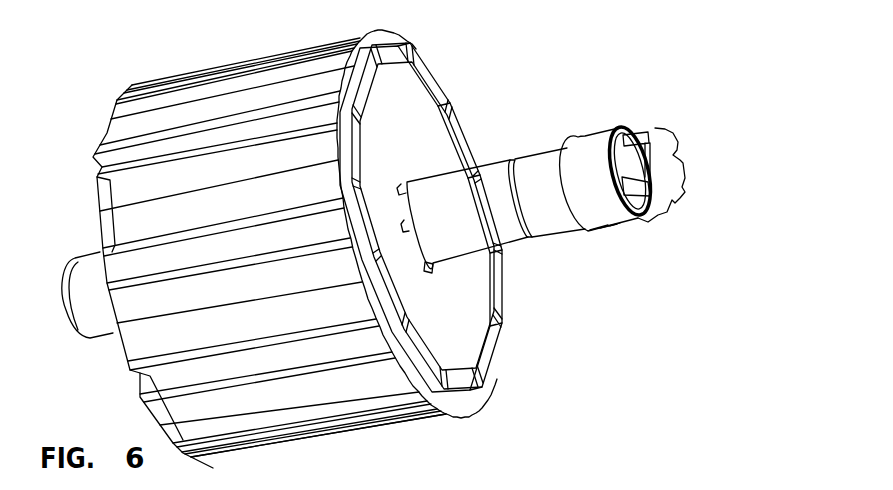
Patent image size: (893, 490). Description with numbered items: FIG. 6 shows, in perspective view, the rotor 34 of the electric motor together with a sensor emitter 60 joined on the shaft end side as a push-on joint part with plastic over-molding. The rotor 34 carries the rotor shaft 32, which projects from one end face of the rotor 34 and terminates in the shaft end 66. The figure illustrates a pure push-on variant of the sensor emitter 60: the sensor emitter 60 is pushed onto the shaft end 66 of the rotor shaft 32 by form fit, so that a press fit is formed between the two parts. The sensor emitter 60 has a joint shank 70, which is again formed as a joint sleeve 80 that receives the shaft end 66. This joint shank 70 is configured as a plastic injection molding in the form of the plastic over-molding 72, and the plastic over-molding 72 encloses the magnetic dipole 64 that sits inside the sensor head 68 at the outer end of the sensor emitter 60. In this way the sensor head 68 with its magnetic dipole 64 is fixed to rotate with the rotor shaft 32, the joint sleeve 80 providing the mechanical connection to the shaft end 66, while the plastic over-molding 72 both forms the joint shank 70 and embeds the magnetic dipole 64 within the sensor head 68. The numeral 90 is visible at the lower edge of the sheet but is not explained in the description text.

The rotor shaft 32 is at (485, 172).
The rotor 34 is at (408, 130).
The sensor emitter 60 is at (598, 135).
The magnetic dipole 64 is at (663, 146).
The shaft end 66 is at (553, 230).
The sensor head 68 is at (703, 165).
The joint shank 70 is at (607, 223).
The plastic over-molding 72 is at (652, 268).
The joint sleeve 80 is at (679, 268).
The rotor 90 is at (351, 452).